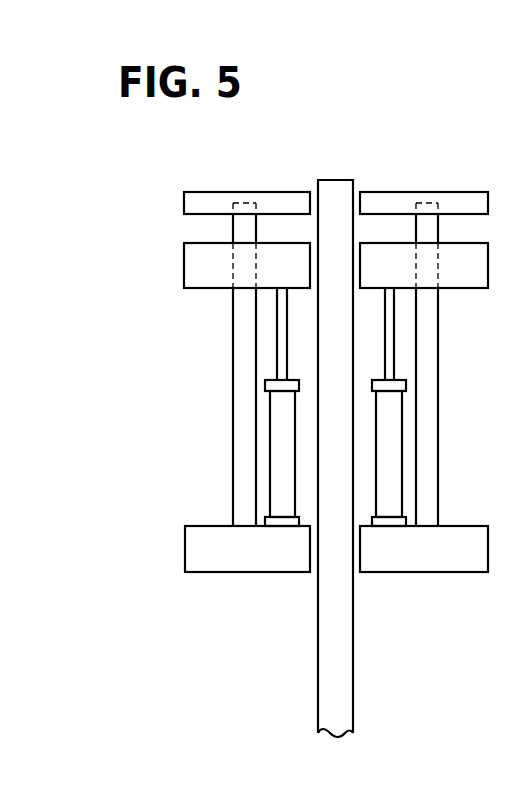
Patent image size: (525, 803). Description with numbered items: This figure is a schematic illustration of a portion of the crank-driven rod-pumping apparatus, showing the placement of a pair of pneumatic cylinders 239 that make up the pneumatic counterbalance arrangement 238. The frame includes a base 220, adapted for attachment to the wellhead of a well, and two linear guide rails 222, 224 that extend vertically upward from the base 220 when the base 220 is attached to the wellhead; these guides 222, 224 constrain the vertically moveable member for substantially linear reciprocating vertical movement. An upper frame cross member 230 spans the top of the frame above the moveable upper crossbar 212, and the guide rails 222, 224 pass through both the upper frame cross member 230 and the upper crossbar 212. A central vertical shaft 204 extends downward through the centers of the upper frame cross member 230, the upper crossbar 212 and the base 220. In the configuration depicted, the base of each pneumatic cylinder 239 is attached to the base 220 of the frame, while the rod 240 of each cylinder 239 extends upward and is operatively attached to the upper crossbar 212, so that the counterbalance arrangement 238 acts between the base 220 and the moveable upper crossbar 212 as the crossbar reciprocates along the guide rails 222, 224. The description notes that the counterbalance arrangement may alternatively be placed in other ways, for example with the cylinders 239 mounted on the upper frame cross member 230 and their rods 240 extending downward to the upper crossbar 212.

The shaft 204 is at (328, 655).
The upper crossbar 212 is at (200, 267).
The base 220 is at (200, 548).
The linear guide rail 222 is at (240, 313).
The linear guide rail 224 is at (432, 313).
The upper frame cross member 230 is at (200, 203).
The pneumatic counterbalance arrangement 238 is at (213, 407).
The pneumatic cylinder 239 is at (280, 467).
The rod 240 is at (280, 353).